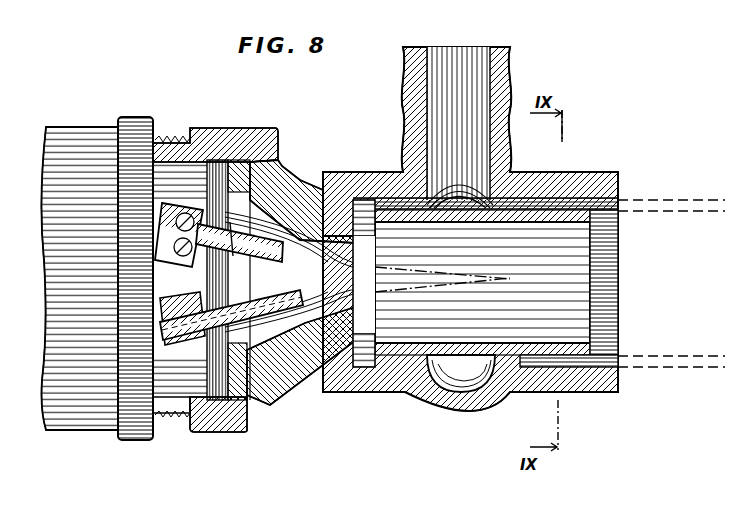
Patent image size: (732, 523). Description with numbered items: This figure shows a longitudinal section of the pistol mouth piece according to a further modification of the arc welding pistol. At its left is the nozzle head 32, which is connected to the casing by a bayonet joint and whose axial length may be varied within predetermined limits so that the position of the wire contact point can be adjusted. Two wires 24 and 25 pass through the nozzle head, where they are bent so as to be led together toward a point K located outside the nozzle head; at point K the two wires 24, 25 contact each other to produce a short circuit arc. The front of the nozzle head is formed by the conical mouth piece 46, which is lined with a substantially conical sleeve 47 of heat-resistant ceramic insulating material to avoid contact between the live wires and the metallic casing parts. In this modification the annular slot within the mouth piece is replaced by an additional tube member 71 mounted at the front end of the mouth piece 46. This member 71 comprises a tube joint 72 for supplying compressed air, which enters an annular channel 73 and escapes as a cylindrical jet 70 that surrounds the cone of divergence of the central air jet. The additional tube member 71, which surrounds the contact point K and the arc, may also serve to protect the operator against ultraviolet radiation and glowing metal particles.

The wire 24 is at (490, 274).
The wire 25 is at (470, 288).
The point K is at (440, 282).
The nozzle head 32 is at (192, 385).
The conical mouth piece 46 is at (290, 180).
The conical sleeve 47 is at (300, 352).
The cylindrical jet 70 is at (665, 201).
The additional tube member 71 is at (462, 382).
The tube joint 72 is at (410, 72).
The annular channel 73 is at (575, 366).